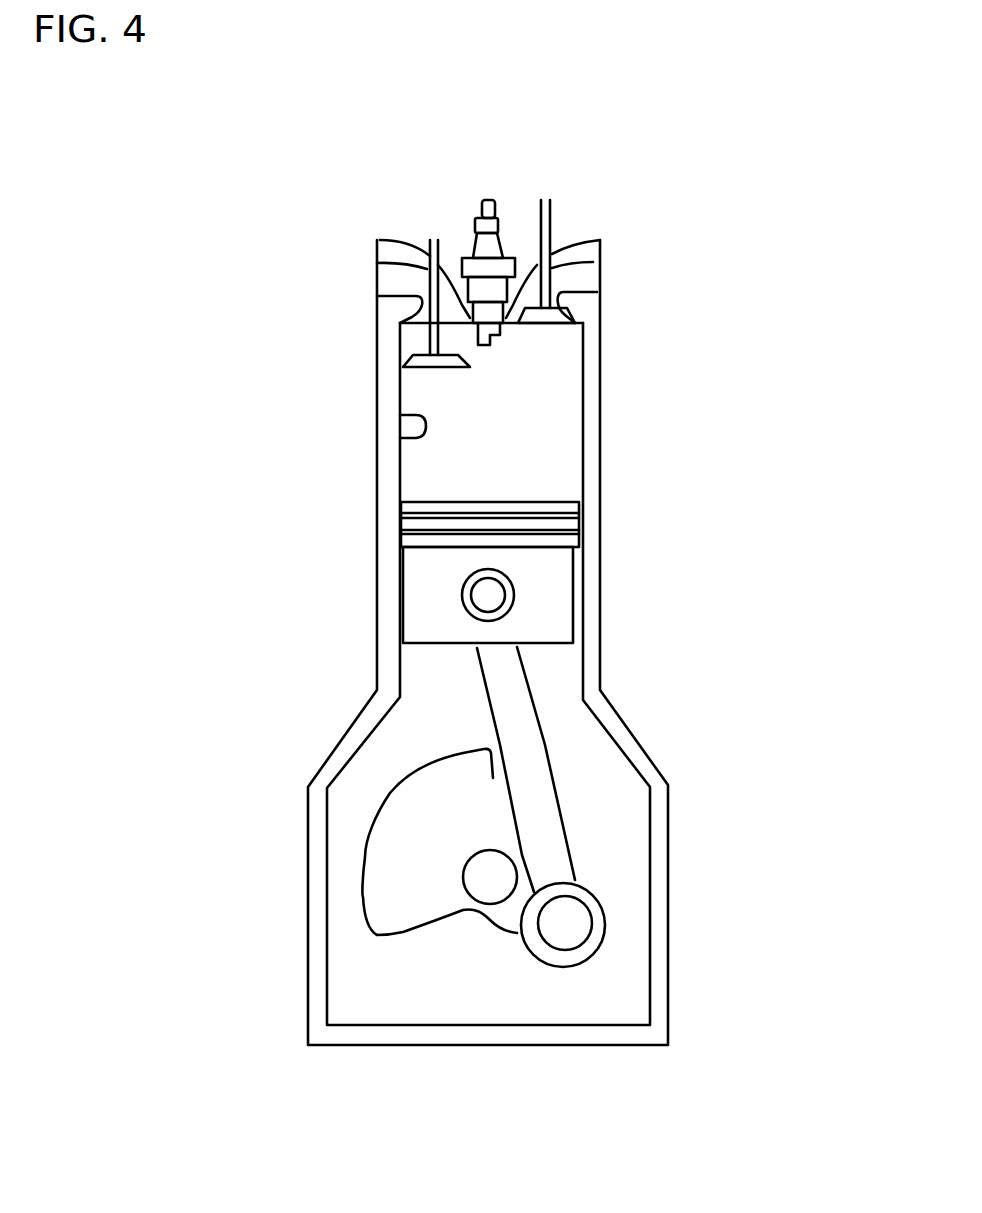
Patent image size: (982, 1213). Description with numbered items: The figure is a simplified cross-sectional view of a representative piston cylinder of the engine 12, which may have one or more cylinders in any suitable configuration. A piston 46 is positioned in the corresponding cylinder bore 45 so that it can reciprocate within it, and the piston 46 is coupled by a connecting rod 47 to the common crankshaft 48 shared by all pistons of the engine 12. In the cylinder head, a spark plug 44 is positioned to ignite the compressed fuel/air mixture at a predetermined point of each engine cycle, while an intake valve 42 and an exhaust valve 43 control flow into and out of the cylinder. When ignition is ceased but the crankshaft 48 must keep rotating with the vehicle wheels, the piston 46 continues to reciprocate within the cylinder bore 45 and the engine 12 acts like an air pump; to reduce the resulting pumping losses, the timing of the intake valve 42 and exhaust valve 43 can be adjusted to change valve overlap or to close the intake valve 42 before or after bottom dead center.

The engine 12 is at (791, 219).
The intake valve 42 is at (403, 360).
The exhaust valve 43 is at (545, 323).
The spark plug 44 is at (488, 200).
The cylinder bore 45 is at (402, 417).
The piston 46 is at (580, 515).
The connecting rod 47 is at (532, 742).
The crankshaft 48 is at (567, 922).